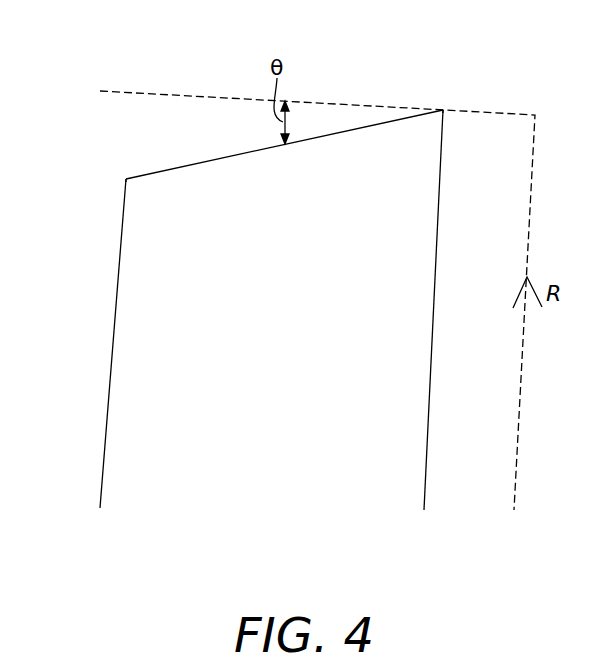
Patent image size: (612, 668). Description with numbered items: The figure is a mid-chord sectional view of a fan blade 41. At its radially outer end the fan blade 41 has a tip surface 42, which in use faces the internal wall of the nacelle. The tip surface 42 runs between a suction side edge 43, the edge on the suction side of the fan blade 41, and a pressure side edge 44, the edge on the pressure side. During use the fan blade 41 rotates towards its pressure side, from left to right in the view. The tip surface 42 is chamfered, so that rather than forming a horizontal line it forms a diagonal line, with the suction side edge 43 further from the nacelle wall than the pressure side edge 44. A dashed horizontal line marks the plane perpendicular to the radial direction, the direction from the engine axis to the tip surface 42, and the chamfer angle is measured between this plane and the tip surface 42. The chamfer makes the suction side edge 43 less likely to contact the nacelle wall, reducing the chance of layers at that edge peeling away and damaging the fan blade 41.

The fan blade 41 is at (158, 305).
The tip surface 42 is at (223, 158).
The suction side edge 43 is at (116, 168).
The pressure side edge 44 is at (445, 109).